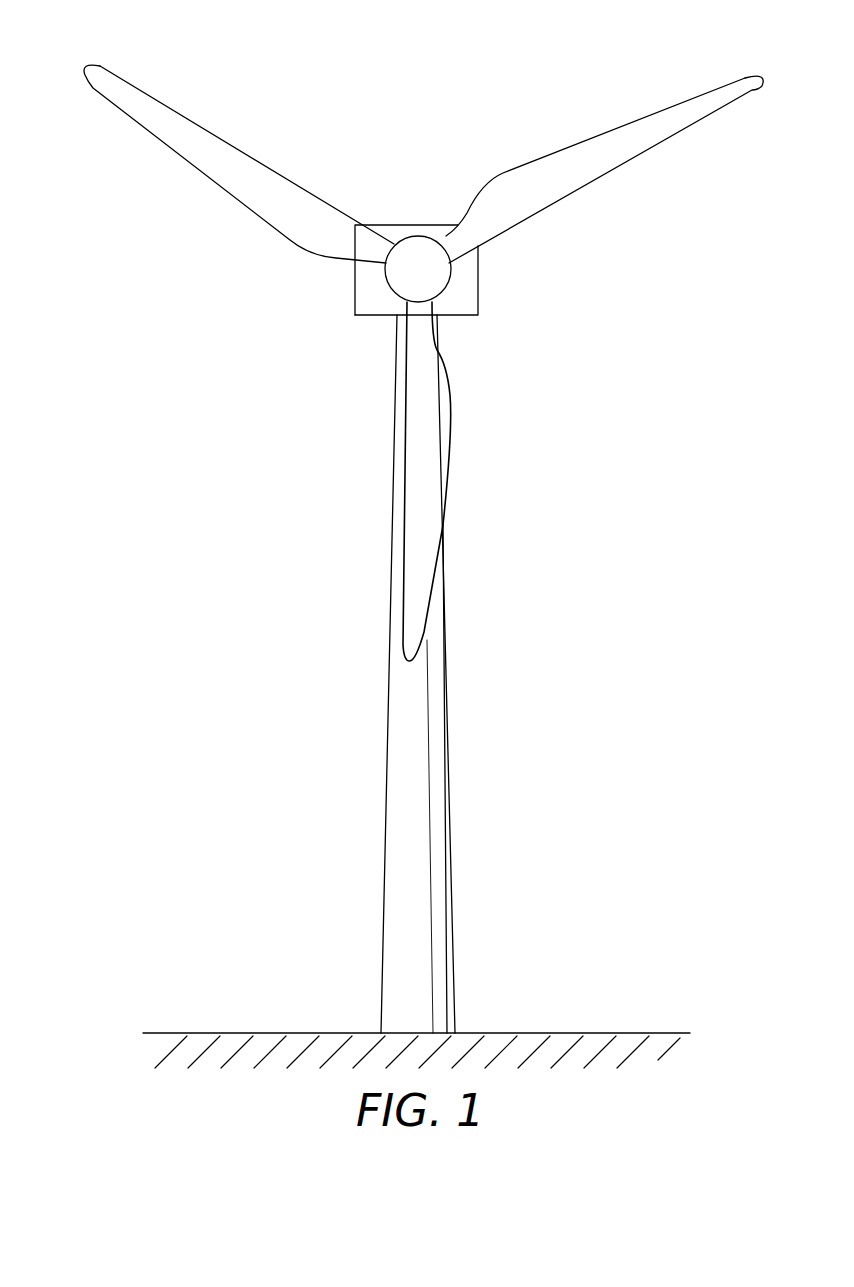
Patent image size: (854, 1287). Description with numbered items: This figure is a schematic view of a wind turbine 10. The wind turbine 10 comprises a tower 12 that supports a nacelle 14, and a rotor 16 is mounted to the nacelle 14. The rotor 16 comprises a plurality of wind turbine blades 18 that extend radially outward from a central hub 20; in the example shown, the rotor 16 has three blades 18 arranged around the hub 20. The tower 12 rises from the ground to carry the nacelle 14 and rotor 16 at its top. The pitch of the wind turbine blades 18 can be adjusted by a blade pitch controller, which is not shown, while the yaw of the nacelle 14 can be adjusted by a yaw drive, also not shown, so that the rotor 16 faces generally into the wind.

The wind turbine 10 is at (423, 555).
The tower 12 is at (455, 818).
The nacelle 14 is at (479, 298).
The rotor 16 is at (423, 352).
The wind turbine blade 18 is at (688, 90).
The central hub 20 is at (418, 236).